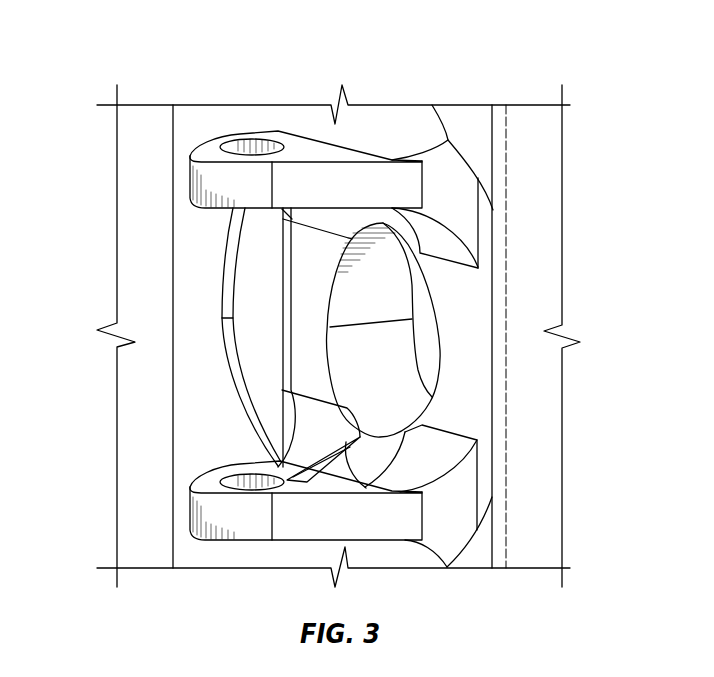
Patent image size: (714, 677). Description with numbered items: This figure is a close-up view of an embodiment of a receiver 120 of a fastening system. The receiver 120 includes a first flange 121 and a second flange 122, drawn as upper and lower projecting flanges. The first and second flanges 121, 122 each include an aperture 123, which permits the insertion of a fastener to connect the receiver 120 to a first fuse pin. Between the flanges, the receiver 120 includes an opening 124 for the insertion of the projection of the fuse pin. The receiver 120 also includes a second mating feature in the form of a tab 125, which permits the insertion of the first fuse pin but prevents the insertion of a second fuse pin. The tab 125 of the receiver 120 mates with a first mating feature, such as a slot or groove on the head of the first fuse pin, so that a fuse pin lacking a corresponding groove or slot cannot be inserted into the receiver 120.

The receiver 120 is at (535, 57).
The first flange 121 is at (215, 180).
The second flange 122 is at (215, 510).
The aperture 123 is at (238, 146).
The opening 124 is at (427, 330).
The tab 125 is at (380, 458).